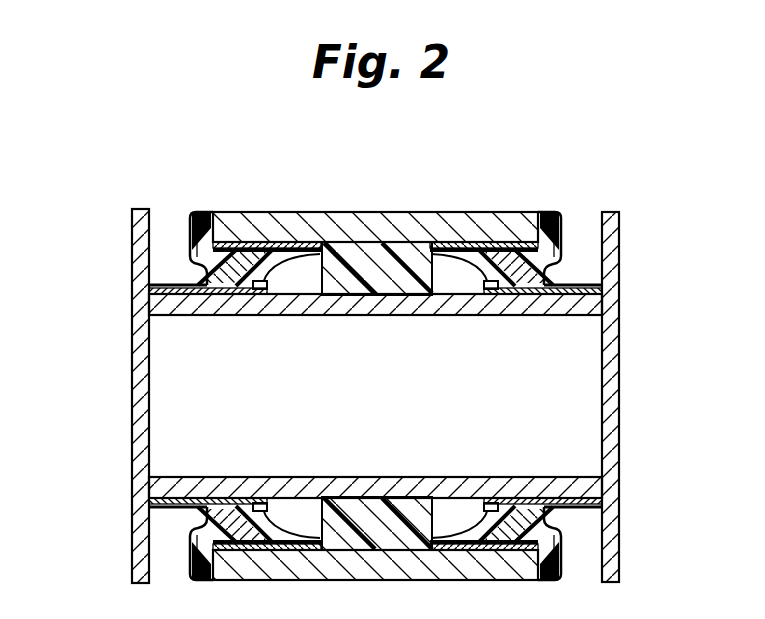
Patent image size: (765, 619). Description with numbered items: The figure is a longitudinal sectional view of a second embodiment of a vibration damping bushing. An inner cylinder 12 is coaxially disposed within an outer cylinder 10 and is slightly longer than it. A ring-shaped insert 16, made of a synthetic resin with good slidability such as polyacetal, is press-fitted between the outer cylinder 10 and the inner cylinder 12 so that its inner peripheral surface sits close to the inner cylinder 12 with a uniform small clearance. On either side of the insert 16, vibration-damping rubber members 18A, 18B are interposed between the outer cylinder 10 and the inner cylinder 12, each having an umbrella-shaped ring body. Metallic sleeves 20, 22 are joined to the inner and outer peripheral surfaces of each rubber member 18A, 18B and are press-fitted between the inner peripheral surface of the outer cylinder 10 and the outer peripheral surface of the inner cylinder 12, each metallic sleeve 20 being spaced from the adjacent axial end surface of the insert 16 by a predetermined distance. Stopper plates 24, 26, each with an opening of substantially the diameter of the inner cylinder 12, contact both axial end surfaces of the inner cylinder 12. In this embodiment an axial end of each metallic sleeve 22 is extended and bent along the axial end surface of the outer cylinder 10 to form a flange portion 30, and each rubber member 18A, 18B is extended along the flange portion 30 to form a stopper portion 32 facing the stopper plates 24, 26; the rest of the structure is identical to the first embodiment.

The outer cylinder 10 is at (307, 222).
The inner cylinder 12 is at (171, 316).
The ring-shaped insert 16 is at (383, 256).
The vibration-damping rubber member 18A is at (251, 282).
The vibration-damping rubber member 18B is at (497, 282).
The metallic sleeve 20 is at (235, 278).
The metallic sleeve 22 is at (248, 241).
The stopper plate 24 is at (132, 250).
The stopper plate 26 is at (619, 250).
The flange portion 30 is at (207, 210).
The stopper portion 32 is at (186, 210).